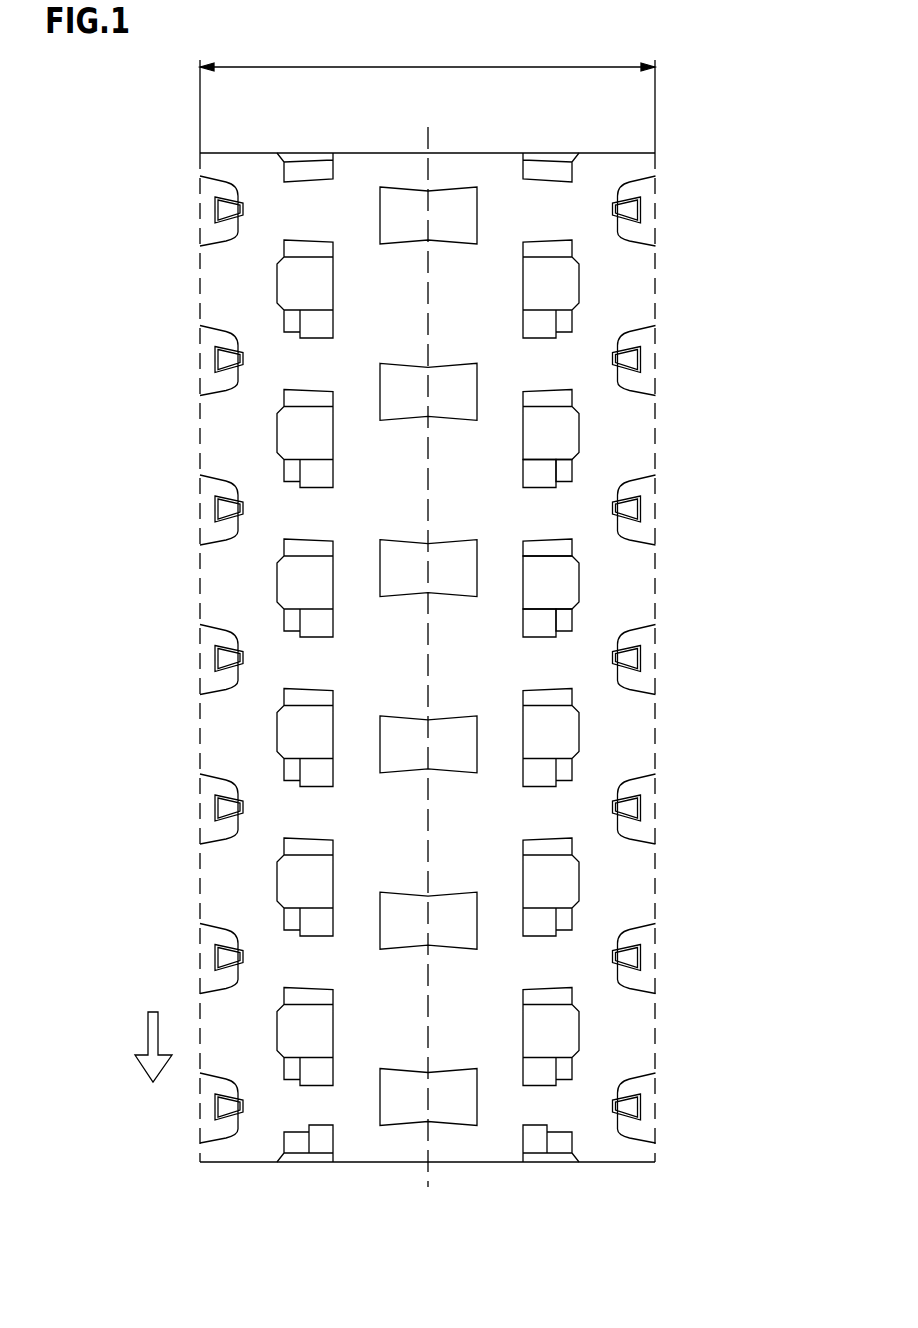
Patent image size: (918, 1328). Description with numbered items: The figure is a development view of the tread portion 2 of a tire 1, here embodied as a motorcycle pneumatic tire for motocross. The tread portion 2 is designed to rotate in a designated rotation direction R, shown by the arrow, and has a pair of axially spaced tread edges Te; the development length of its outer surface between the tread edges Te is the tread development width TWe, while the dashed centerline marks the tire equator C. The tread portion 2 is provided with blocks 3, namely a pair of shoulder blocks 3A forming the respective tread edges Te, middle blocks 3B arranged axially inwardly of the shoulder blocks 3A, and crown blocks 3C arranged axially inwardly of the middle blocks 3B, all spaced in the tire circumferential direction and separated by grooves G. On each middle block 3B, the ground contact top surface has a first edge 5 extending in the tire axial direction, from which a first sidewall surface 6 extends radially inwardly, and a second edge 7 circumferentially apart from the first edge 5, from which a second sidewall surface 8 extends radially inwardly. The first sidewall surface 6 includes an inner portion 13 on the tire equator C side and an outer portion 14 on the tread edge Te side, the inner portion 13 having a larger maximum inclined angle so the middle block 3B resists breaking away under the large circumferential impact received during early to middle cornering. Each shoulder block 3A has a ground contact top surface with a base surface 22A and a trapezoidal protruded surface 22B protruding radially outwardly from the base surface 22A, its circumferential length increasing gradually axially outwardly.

The tire 1 is at (783, 83).
The tread portion 2 is at (676, 105).
The blocks 3 is at (483, 696).
The shoulder blocks 3A is at (638, 1125).
The middle blocks 3B is at (549, 1043).
The crown blocks 3C is at (407, 1097).
The first edge 5 is at (543, 609).
The first sidewall surface 6 is at (562, 622).
The second edge 7 is at (548, 557).
The second sidewall surface 8 is at (557, 548).
The inner portion 13 is at (535, 472).
The outer portion 14 is at (560, 472).
The base surface 22A is at (643, 935).
The protruded surface 22B is at (628, 953).
The groove G is at (630, 283).
The tread edges Te is at (200, 195).
The tread development width TWe is at (427, 93).
The tire equator C is at (428, 642).
The rotation direction R is at (153, 1063).